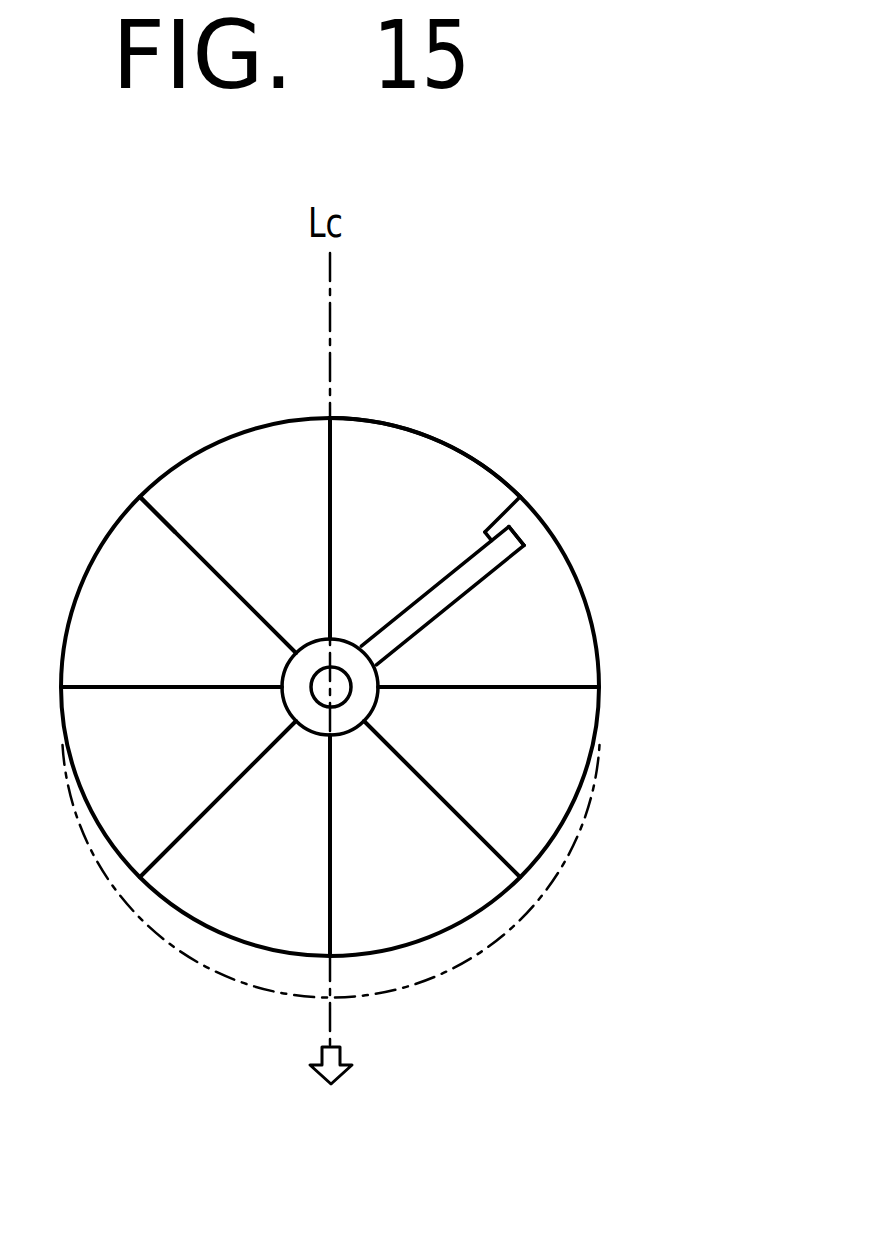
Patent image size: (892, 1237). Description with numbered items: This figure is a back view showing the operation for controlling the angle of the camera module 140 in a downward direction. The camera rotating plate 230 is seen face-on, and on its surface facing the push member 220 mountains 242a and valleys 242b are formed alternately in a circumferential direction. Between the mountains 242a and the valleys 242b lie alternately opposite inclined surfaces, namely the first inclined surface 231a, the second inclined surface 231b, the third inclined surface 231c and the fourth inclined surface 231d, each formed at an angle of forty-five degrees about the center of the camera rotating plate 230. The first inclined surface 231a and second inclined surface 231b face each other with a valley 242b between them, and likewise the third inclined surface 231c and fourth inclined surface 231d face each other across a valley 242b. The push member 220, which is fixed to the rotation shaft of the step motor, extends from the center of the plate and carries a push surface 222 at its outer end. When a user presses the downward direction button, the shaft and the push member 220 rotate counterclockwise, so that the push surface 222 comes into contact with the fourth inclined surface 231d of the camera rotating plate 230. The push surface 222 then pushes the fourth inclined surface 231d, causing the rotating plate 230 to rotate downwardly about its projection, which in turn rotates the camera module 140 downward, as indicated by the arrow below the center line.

The camera rotating plate 230 is at (520, 458).
The push member 220 is at (433, 598).
The push surface 222 is at (497, 515).
The first inclined surface 231a is at (245, 517).
The second inclined surface 231b is at (402, 503).
The third inclined surface 231c is at (527, 857).
The fourth inclined surface 231d is at (513, 638).
The mountain 242a is at (147, 490).
The valley 242b is at (345, 427).
The camera module 140 is at (562, 870).